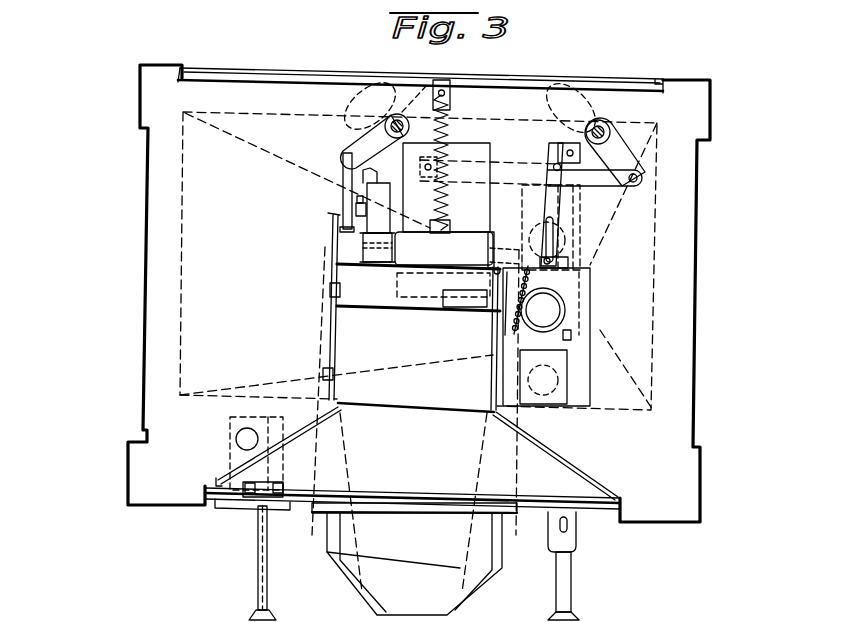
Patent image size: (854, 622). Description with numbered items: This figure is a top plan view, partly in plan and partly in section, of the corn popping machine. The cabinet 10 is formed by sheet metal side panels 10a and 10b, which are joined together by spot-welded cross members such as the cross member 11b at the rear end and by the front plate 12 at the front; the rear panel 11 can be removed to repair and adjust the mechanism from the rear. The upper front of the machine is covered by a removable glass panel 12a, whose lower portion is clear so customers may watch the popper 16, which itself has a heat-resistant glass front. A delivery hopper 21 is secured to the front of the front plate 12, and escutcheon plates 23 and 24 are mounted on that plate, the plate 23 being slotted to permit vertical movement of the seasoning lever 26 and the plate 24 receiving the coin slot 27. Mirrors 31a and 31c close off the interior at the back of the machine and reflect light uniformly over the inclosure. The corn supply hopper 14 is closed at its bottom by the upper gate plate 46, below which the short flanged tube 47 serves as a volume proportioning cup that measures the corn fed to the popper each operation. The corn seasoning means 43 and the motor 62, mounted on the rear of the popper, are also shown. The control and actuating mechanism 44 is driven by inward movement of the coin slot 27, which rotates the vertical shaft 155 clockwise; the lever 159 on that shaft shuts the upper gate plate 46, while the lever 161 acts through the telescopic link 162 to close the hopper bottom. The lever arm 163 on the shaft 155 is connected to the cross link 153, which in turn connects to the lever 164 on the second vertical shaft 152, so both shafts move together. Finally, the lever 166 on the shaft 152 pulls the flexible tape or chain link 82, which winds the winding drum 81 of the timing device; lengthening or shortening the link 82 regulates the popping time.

The cabinet 10 is at (401, 293).
The side panel 10a is at (749, 303).
The side panel 10b is at (138, 338).
The rear panel 11 is at (420, 60).
The cross member 11b is at (212, 78).
The front plate 12 is at (418, 525).
The glass panel 12a is at (230, 494).
The hopper 14 is at (660, 227).
The popper 16 is at (362, 338).
The delivery hopper 21 is at (493, 553).
The escutcheon plate 23 is at (247, 508).
The escutcheon plate 24 is at (548, 514).
The seasoning lever 26 is at (265, 594).
The coin slot 27 is at (567, 566).
The mirror 31a is at (220, 476).
The mirror 31c is at (595, 476).
The corn seasoning means 43 is at (237, 438).
The control and actuating mechanism 44 is at (532, 157).
The gate plate 46 is at (550, 390).
The flanged tube 47 is at (547, 305).
The motor 62 is at (426, 204).
The winding drum 81 is at (340, 200).
The link 82 is at (352, 203).
The vertical shaft 152 is at (390, 118).
The cross link 153 is at (600, 190).
The vertical shaft 155 is at (598, 127).
The lever 159 is at (575, 128).
The lever 161 is at (420, 92).
The telescopic link 162 is at (447, 136).
The lever arm 163 is at (618, 148).
The lever 164 is at (413, 148).
The lever 166 is at (368, 147).